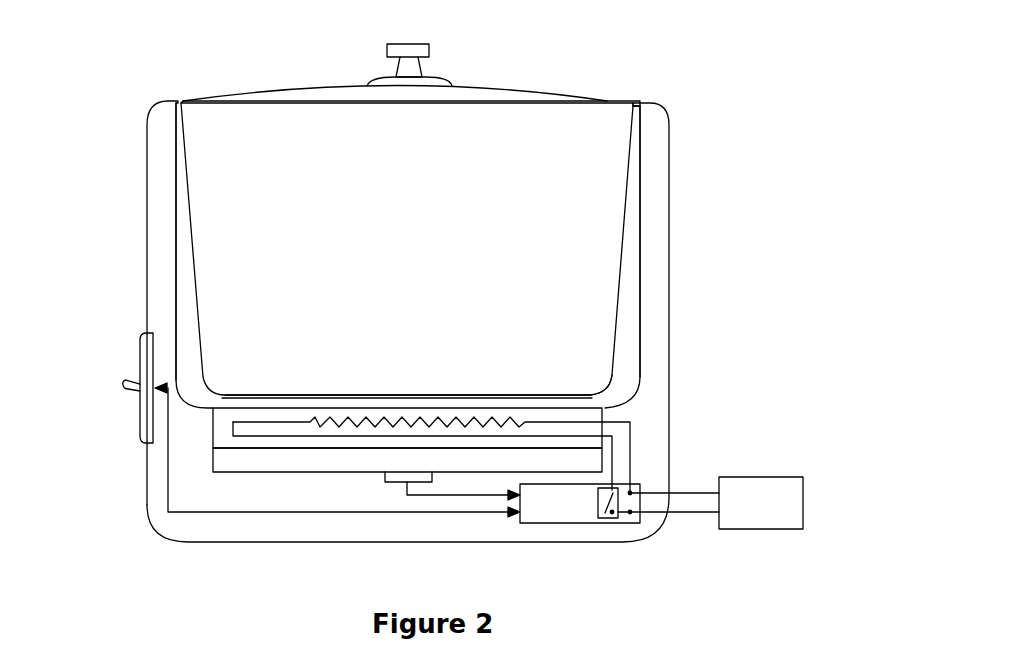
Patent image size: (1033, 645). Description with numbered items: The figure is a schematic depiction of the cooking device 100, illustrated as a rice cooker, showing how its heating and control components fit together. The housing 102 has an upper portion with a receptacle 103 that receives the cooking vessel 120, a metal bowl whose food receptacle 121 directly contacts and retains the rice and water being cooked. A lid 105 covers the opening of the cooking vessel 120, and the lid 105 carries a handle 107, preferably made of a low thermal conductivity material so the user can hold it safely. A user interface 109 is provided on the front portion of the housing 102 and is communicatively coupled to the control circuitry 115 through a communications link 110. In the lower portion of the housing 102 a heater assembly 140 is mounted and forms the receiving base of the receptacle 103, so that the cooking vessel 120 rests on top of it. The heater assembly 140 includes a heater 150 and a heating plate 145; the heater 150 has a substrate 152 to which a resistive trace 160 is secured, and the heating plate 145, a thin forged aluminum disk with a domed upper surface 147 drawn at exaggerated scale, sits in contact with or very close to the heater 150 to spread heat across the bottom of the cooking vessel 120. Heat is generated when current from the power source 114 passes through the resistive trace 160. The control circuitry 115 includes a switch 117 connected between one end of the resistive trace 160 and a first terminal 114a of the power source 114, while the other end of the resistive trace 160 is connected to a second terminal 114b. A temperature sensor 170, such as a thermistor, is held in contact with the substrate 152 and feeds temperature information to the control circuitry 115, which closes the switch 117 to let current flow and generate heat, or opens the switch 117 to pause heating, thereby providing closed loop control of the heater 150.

The cooking device 100 is at (650, 52).
The housing 102 is at (669, 131).
The receptacle 103 is at (640, 211).
The lid 105 is at (510, 86).
The handle 107 is at (416, 44).
The user interface 109 is at (140, 365).
The communications link 110 is at (312, 512).
The power source 114 is at (803, 500).
The first terminal 114a is at (690, 516).
The second terminal 114b is at (693, 490).
The control circuitry 115 is at (540, 523).
The switch 117 is at (612, 523).
The cooking vessel 120 is at (625, 280).
The food receptacle 121 is at (224, 120).
The heater assembly 140 is at (188, 466).
The heating plate 145 is at (603, 400).
The domed upper surface 147 is at (590, 395).
The heater 150 is at (213, 430).
The substrate 152 is at (237, 470).
The resistive trace 160 is at (407, 420).
The temperature sensor 170 is at (393, 483).